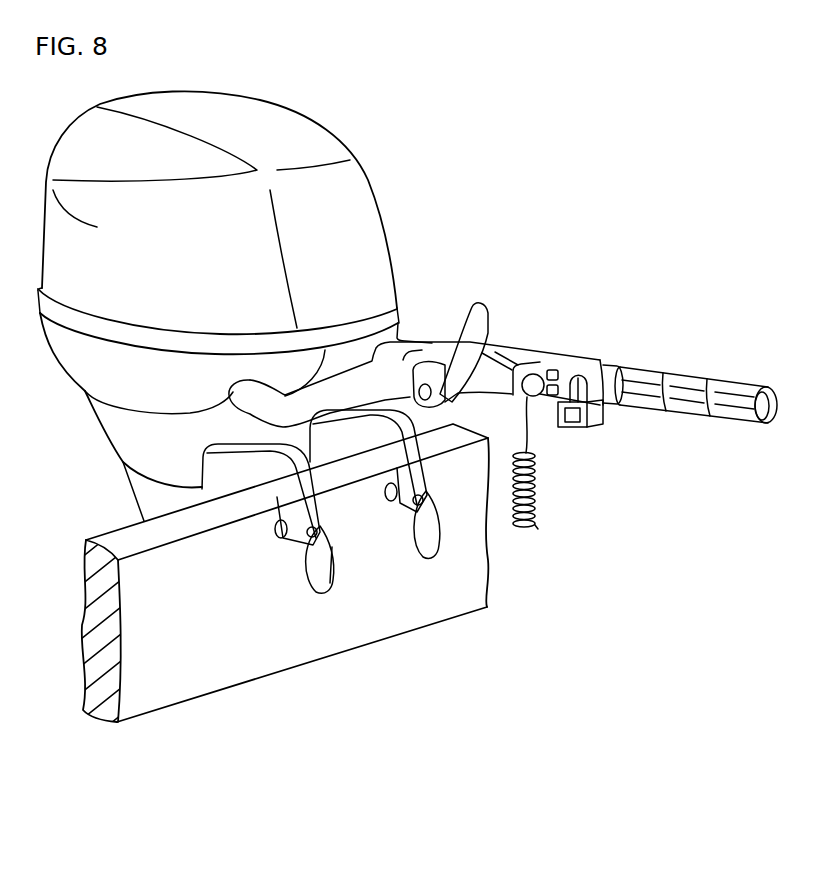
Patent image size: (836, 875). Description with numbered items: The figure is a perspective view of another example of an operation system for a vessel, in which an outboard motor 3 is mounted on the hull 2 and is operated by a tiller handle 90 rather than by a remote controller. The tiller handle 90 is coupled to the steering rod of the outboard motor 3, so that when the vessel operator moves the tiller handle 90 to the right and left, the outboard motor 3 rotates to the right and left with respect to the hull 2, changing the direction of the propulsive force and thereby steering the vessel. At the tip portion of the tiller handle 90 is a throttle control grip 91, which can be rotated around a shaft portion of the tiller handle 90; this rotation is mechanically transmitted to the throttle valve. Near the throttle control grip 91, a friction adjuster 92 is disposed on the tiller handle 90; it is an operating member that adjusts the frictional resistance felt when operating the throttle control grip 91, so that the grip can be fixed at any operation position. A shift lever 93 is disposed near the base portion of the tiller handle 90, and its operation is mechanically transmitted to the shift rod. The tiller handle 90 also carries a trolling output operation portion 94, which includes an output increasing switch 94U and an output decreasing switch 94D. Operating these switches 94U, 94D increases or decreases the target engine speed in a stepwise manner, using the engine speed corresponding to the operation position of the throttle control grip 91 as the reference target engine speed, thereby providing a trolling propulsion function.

The hull 2 is at (210, 653).
The outboard motor 3 is at (329, 113).
The tiller handle 90 is at (518, 347).
The throttle control grip 91 is at (730, 393).
The friction adjuster 92 is at (592, 423).
The shift lever 93 is at (472, 305).
The trolling output operation portion 94 is at (645, 302).
The output increasing switch 94U is at (550, 368).
The output decreasing switch 94D is at (563, 383).